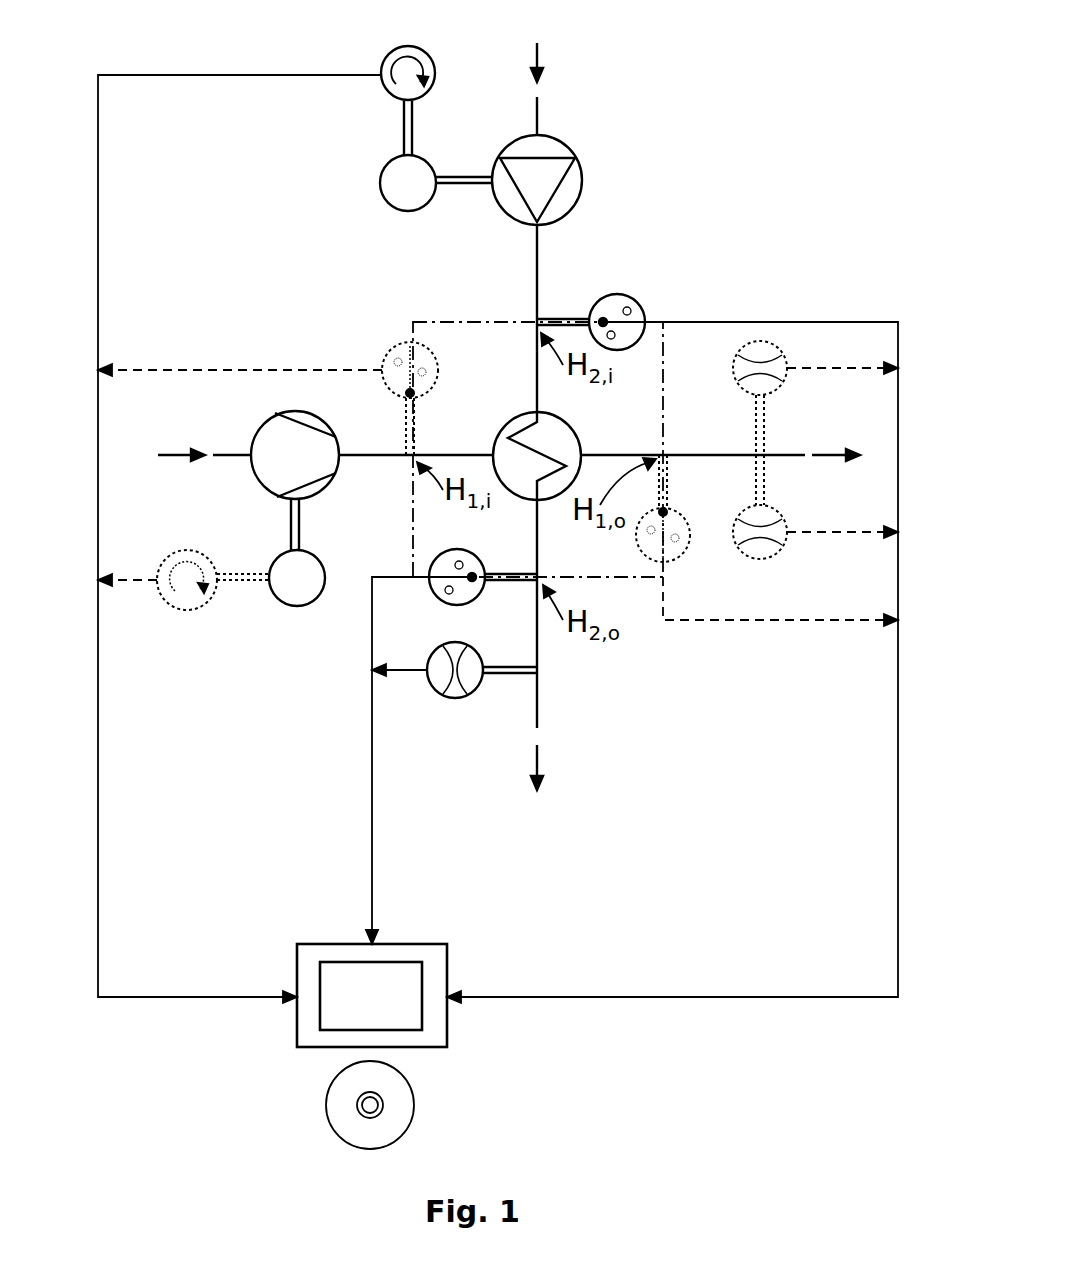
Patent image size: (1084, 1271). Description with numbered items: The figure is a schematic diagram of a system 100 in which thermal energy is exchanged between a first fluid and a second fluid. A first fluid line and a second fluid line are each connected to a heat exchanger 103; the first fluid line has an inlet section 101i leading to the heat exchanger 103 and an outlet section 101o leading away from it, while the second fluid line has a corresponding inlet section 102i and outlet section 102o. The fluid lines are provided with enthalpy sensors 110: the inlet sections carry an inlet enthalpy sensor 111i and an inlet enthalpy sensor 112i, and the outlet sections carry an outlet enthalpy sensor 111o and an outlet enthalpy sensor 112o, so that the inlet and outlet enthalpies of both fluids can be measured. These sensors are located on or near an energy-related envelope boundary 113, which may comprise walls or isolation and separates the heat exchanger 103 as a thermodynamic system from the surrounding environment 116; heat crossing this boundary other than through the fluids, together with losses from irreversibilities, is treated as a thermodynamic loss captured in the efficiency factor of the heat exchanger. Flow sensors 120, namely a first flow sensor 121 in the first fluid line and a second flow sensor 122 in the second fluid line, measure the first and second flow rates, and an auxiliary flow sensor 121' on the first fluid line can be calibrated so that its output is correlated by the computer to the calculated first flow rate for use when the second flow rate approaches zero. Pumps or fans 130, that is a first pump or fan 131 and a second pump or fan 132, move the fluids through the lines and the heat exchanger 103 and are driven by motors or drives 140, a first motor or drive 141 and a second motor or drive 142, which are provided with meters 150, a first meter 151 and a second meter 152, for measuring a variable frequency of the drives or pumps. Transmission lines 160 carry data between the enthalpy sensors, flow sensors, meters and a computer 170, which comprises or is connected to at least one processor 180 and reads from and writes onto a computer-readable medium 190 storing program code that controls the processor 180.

The system 100 is at (740, 74).
The inlet section of the first fluid line 101i is at (240, 470).
The outlet section of the first fluid line 101o is at (835, 455).
The inlet section of the second fluid line 102i is at (537, 262).
The outlet section of the second fluid line 102o is at (540, 648).
The heat exchanger 103 is at (518, 420).
The enthalpy sensors 110 is at (341, 386).
The inlet enthalpy sensor 111i is at (395, 348).
The outlet enthalpy sensor 111o is at (672, 562).
The inlet enthalpy sensor 112i is at (638, 298).
The outlet enthalpy sensor 112o is at (430, 595).
The envelope boundary 113 is at (383, 519).
The environment 116 is at (778, 774).
The flow sensors 120 is at (462, 695).
The first flow sensor 121 is at (786, 513).
The auxiliary flow sensor 121' is at (802, 412).
The second flow sensor 122 is at (448, 697).
The pumps or fans 130 is at (238, 440).
The first pump or fan 131 is at (285, 412).
The second pump or fan 132 is at (578, 158).
The motors or drives 140 is at (358, 379).
The first motor or drive 141 is at (282, 603).
The second motor or drive 142 is at (382, 170).
The meters 150 is at (195, 629).
The first meter 151 is at (182, 606).
The second meter 152 is at (400, 47).
The transmission lines 160 is at (132, 370).
The computer 170 is at (373, 1021).
The processor 180 is at (422, 1013).
The computer-readable medium 190 is at (328, 1112).